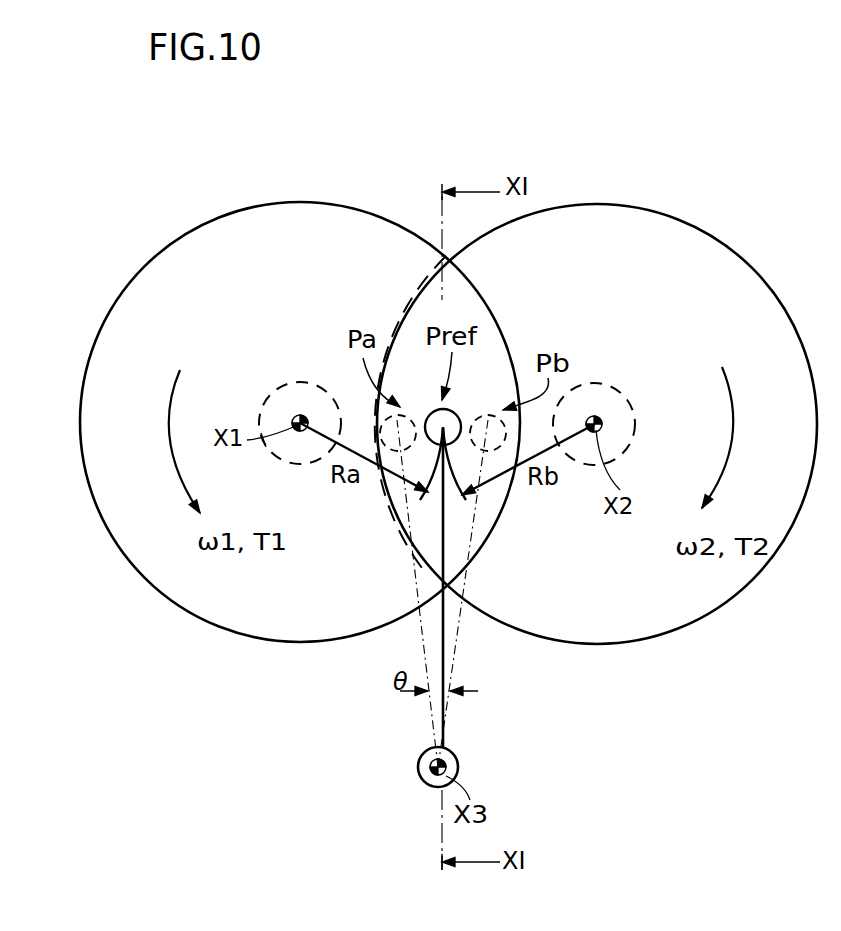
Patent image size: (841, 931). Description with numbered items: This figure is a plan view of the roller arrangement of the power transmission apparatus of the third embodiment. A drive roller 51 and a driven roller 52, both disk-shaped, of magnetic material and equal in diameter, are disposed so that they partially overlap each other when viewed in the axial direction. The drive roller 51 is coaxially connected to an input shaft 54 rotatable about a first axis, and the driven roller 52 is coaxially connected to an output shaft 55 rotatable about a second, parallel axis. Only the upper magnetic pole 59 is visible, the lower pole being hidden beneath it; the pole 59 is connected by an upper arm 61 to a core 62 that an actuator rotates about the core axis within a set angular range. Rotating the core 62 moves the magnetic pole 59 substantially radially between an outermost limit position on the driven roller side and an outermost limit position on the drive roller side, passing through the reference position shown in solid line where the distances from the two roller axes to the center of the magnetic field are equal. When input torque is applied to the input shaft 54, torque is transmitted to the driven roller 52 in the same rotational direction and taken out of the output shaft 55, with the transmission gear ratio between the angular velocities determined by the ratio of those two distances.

The drive roller 51 is at (300, 202).
The driven roller 52 is at (701, 230).
The input shaft 54 is at (302, 381).
The output shaft 55 is at (620, 396).
The magnetic pole 59 is at (453, 407).
The upper arm 61 is at (437, 642).
The core 62 is at (418, 767).